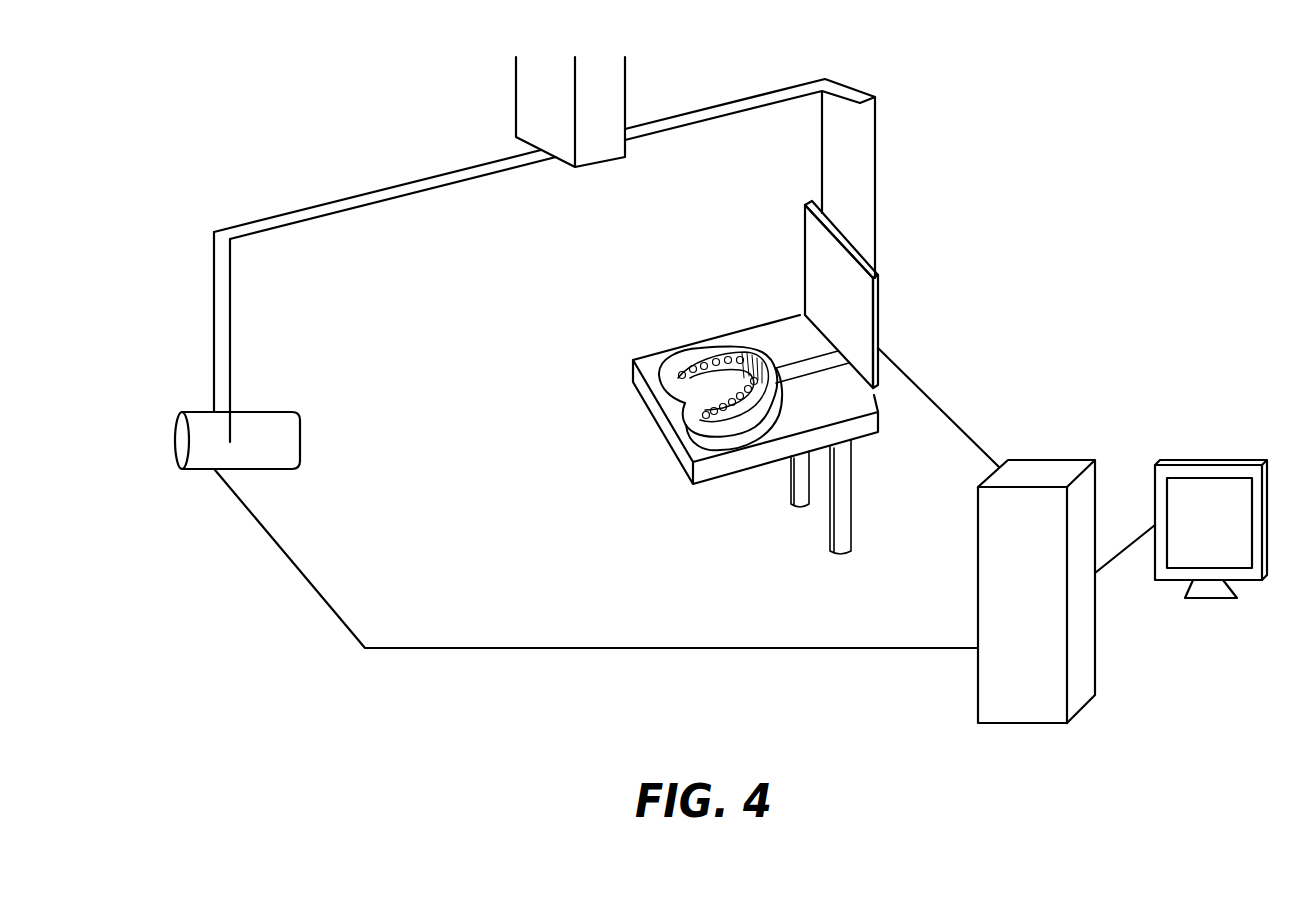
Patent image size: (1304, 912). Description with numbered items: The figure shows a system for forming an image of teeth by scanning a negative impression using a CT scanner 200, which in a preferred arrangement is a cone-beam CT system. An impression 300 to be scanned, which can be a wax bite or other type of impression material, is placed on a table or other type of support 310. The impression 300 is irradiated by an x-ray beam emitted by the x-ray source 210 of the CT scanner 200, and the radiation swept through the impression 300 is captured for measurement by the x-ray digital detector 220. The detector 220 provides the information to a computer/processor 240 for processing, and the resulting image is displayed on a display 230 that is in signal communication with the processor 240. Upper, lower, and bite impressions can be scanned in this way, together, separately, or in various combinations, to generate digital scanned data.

The CT scanner 200 is at (213, 147).
The x-ray source 210 is at (180, 442).
The detector 220 is at (880, 302).
The display 230 is at (1205, 458).
The computer/processor 240 is at (1038, 728).
The impression 300 is at (723, 358).
The support 310 is at (858, 421).